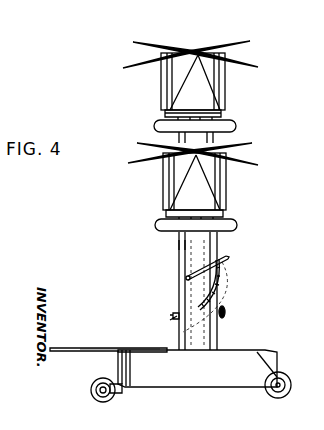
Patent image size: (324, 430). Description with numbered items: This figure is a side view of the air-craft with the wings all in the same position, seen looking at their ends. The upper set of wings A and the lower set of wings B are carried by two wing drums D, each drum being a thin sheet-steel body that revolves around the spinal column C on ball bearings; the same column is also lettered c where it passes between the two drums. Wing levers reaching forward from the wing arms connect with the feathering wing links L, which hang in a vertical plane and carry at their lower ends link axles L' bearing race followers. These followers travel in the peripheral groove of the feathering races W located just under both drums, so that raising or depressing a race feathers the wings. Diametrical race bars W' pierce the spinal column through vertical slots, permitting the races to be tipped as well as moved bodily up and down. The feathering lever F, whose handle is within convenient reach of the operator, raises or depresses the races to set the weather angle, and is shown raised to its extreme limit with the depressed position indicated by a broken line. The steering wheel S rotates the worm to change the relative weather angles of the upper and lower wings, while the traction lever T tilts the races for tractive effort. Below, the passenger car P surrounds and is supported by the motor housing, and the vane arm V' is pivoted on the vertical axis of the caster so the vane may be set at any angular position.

The upper set of wings A is at (244, 42).
The lower set of wings B is at (241, 145).
The spinal column C is at (197, 237).
The spinal column c is at (198, 241).
The wing drum D is at (193, 135).
The feathering wing link L is at (193, 144).
The link axle L' is at (154, 93).
The feathering race W is at (201, 124).
The race bar W' is at (203, 231).
The feathering lever F is at (229, 260).
The steering wheel S is at (225, 312).
The traction lever T is at (171, 320).
The passenger car P is at (197, 368).
The vane arm V' is at (108, 357).